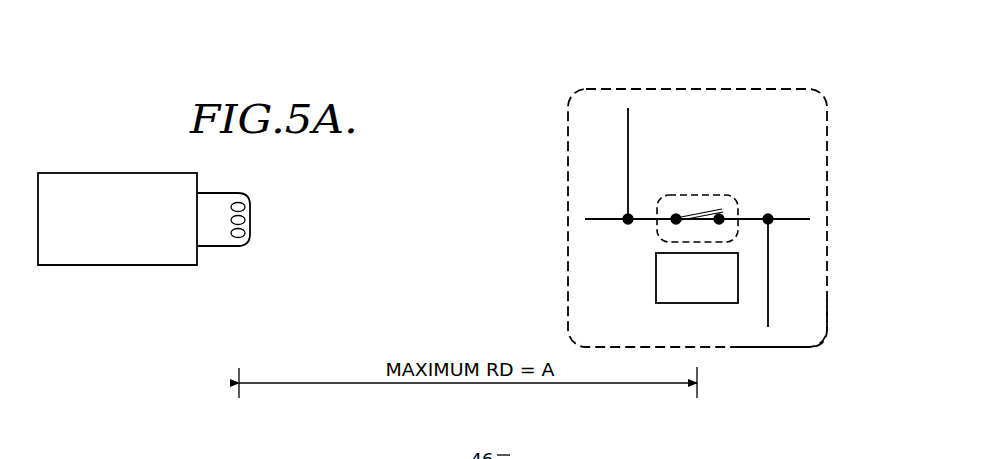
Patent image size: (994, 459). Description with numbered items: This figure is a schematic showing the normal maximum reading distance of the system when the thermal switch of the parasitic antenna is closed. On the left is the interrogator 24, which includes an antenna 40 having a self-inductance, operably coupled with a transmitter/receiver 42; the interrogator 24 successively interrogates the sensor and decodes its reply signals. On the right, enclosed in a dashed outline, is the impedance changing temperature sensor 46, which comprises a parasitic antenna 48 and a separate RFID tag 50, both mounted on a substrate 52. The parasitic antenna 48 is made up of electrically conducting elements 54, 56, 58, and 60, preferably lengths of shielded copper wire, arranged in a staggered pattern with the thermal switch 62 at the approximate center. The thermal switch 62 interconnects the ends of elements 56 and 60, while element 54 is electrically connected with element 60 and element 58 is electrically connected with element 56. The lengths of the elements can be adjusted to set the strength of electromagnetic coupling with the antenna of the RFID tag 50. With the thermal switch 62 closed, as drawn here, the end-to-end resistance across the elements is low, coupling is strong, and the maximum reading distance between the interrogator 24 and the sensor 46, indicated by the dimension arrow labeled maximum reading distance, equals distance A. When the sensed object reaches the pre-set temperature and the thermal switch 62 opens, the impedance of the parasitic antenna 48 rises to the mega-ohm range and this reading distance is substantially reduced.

The interrogator 24 is at (110, 170).
The antenna 40 is at (242, 246).
The transmitter/receiver 42 is at (137, 265).
The impedance changing temperature sensor 46 is at (768, 77).
The parasitic antenna 48 is at (682, 167).
The RFID tag 50 is at (687, 303).
The substrate 52 is at (795, 333).
The element 54 is at (628, 130).
The element 56 is at (802, 219).
The element 58 is at (768, 270).
The element 60 is at (600, 219).
The thermal switch 62 is at (722, 198).